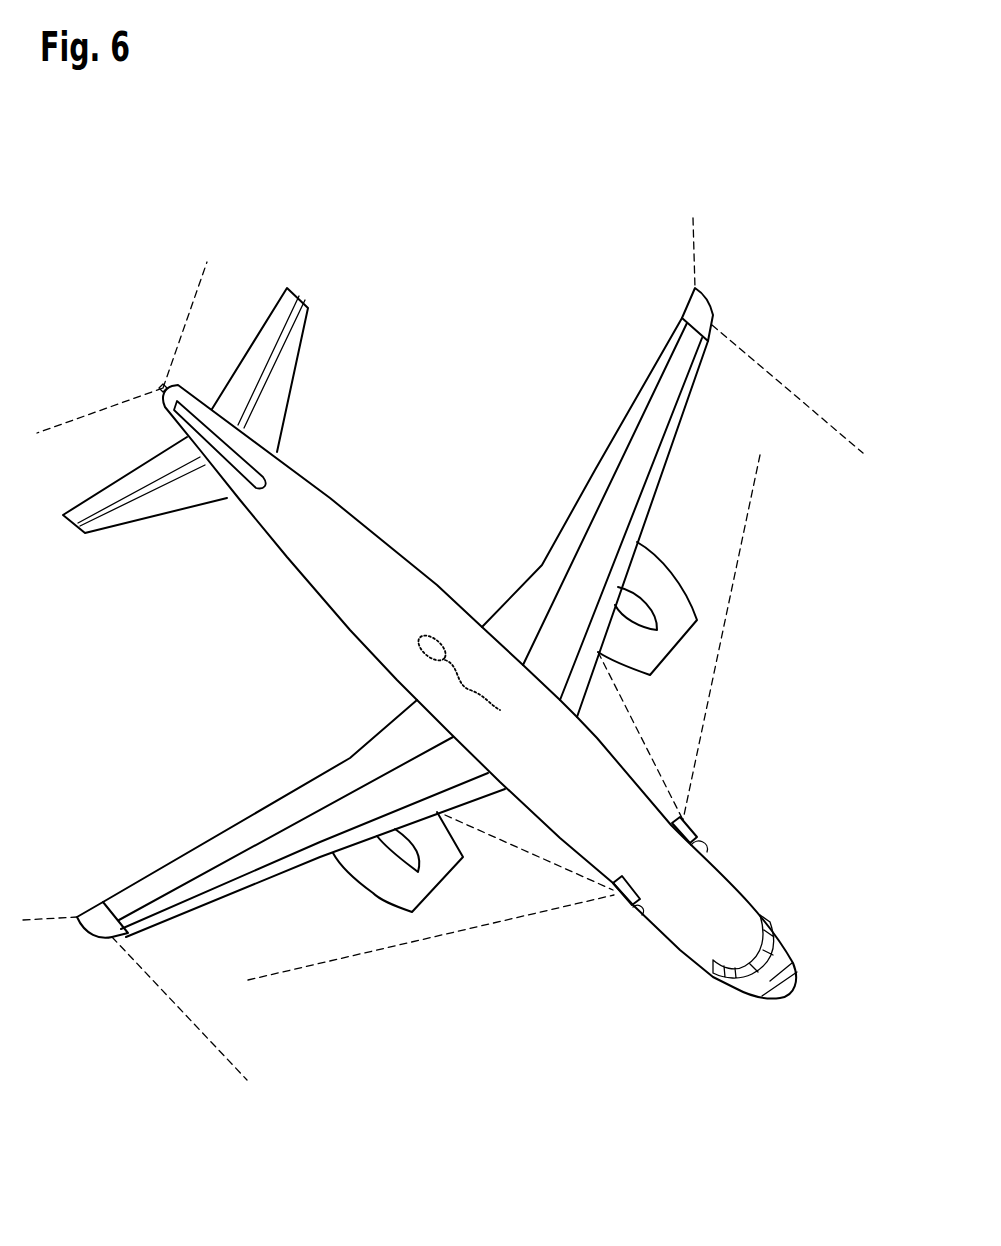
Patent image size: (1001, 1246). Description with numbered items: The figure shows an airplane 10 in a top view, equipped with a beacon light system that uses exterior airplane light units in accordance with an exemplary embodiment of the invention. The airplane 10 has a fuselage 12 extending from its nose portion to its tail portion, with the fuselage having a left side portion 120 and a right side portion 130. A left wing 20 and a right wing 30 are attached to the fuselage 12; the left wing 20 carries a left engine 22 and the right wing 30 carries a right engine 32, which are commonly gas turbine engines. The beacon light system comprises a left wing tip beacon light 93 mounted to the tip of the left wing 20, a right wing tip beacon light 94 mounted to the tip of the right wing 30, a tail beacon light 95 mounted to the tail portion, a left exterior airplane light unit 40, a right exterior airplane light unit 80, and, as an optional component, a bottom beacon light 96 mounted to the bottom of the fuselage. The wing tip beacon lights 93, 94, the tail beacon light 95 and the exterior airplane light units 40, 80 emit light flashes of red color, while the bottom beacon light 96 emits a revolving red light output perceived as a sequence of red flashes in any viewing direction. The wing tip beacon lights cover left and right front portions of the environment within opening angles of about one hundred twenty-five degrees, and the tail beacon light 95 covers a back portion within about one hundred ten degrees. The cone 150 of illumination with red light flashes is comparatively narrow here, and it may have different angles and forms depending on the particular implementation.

The airplane 10 is at (464, 440).
The fuselage 12 is at (437, 583).
The left wing 20 is at (697, 368).
The left engine 22 is at (677, 580).
The right wing 30 is at (160, 920).
The right engine 32 is at (373, 895).
The left exterior airplane light unit 40 is at (703, 847).
The right exterior airplane light unit 80 is at (637, 910).
The left wing tip beacon light 93 is at (713, 308).
The right wing tip beacon light 94 is at (97, 933).
The tail beacon light 95 is at (163, 388).
The bottom beacon light 96 is at (471, 684).
The left side portion 120 is at (613, 780).
The right side portion 130 is at (587, 840).
The cone of illumination 150 is at (715, 695).